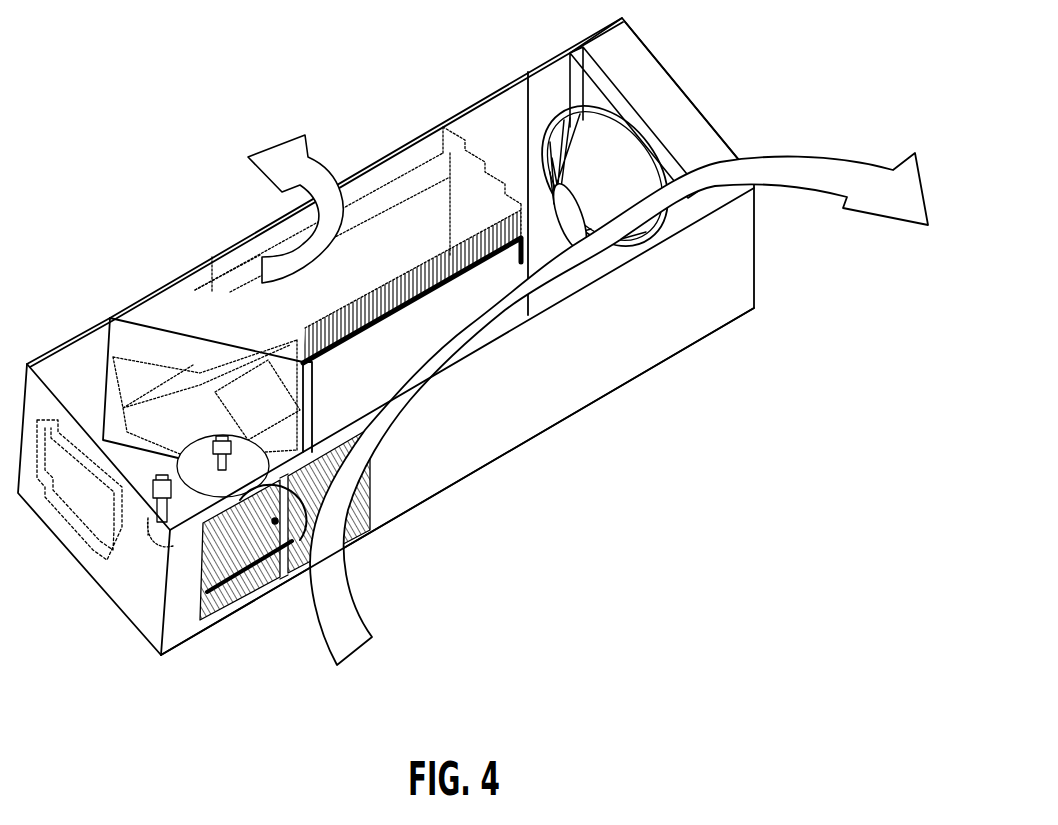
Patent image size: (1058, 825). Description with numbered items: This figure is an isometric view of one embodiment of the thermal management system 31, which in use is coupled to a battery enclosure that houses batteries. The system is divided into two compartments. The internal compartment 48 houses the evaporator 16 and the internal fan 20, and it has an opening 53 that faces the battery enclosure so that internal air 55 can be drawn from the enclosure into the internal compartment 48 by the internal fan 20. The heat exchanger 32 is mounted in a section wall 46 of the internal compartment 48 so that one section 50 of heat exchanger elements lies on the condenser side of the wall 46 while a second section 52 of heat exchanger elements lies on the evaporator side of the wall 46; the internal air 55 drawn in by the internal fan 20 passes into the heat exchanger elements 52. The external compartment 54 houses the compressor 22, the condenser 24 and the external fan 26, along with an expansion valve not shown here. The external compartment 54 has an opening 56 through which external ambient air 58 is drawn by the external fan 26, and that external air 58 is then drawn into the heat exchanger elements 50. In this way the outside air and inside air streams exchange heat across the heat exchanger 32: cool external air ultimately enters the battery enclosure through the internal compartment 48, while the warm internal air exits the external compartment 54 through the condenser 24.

The evaporator 16 is at (402, 249).
The internal fan 20 is at (262, 402).
The compressor 22 is at (186, 500).
The condenser 24 is at (648, 90).
The external fan 26 is at (635, 170).
The thermal management system 31 is at (61, 56).
The heat exchanger 32 is at (372, 342).
The section wall 46 is at (305, 362).
The internal compartment 48 is at (517, 120).
The section of heat exchanger elements 50 is at (473, 287).
The second section of heat exchanger elements 52 is at (453, 257).
The opening 53 is at (263, 243).
The external compartment 54 is at (560, 438).
The internal air 55 is at (297, 147).
The opening 56 is at (244, 606).
The external ambient air 58 is at (337, 615).